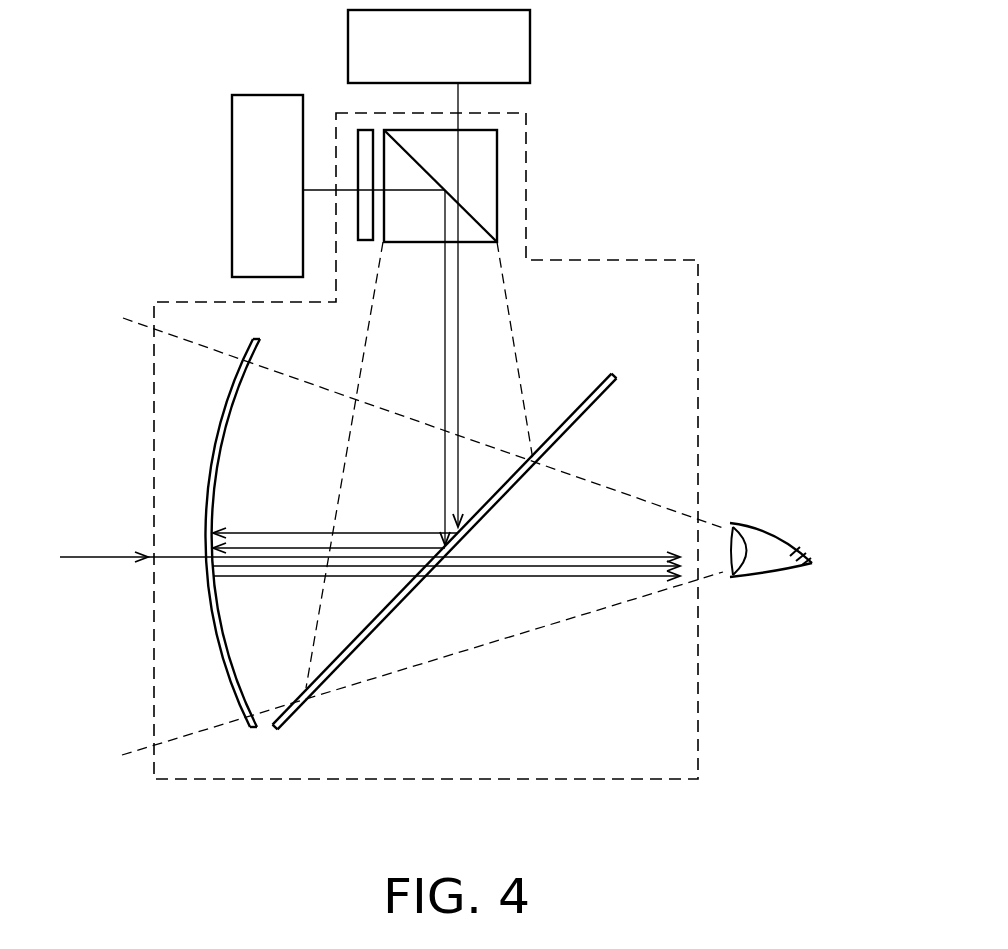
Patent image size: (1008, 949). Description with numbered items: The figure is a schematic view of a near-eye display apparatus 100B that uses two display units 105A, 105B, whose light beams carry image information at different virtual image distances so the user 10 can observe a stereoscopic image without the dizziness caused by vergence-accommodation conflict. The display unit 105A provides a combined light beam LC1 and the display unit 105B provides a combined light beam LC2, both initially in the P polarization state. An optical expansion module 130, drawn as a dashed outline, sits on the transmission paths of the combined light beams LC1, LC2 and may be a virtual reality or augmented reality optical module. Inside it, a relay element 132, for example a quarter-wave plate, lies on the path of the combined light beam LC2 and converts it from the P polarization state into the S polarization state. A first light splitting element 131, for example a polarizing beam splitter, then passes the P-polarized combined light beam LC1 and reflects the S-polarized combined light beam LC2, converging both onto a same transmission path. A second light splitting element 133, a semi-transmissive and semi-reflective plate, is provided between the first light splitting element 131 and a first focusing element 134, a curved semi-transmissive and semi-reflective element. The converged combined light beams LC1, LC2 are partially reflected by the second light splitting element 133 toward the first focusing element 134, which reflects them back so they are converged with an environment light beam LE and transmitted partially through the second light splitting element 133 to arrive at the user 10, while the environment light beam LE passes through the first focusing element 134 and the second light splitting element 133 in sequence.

The near-eye display apparatus 100B is at (830, 812).
The display unit 105A is at (518, 50).
The display unit 105B is at (248, 175).
The optical expansion module 130 is at (660, 260).
The first light splitting element 131 is at (497, 170).
The relay element 132 is at (367, 142).
The second light splitting element 133 is at (615, 373).
The first focusing element 134 is at (220, 650).
The user 10 is at (788, 522).
The combined light beam LC1 is at (458, 147).
The combined light beam LC2 is at (320, 188).
The environment light beam LE is at (370, 537).